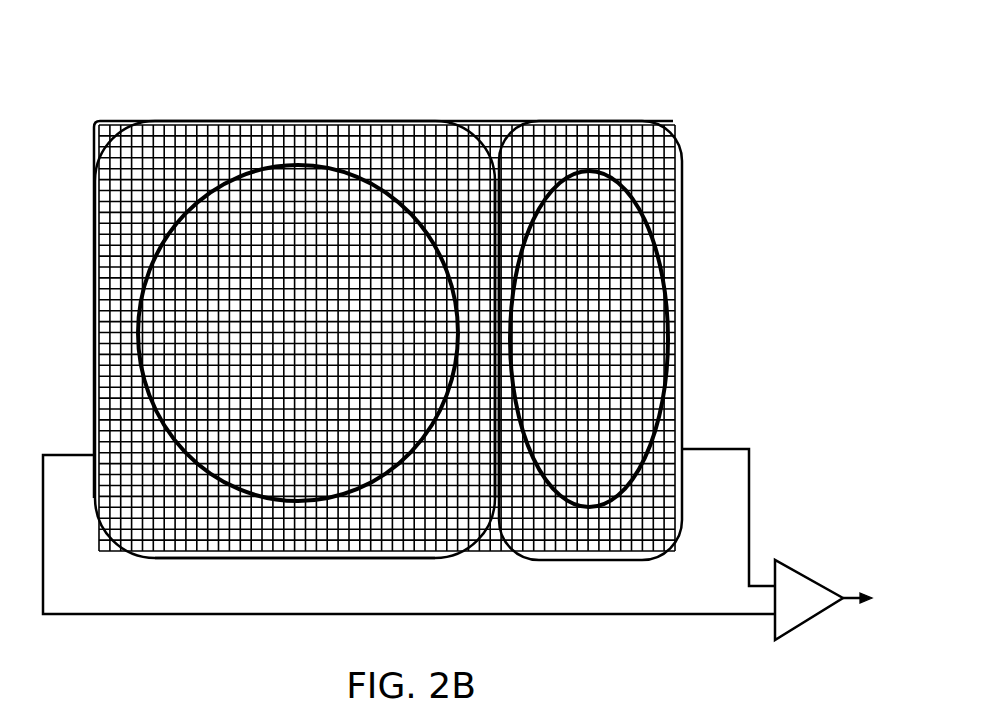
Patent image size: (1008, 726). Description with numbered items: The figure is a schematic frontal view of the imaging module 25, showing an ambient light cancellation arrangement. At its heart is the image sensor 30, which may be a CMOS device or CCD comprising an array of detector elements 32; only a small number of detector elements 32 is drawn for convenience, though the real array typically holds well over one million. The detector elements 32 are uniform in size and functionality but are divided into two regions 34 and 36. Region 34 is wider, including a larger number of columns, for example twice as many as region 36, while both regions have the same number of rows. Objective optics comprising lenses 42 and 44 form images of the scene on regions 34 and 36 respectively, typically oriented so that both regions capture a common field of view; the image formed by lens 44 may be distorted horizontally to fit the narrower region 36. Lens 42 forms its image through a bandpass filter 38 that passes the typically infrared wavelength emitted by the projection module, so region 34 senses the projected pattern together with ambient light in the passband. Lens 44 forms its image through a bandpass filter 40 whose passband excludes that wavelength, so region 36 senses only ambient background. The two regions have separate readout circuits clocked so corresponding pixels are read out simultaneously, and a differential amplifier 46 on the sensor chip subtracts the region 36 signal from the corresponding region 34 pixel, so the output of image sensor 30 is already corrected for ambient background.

The imaging module 25 is at (444, 335).
The image sensor 30 is at (666, 117).
The detector elements 32 is at (655, 142).
The region 34 is at (86, 106).
The region 36 is at (675, 106).
The bandpass filter 38 is at (191, 552).
The bandpass filter 40 is at (503, 548).
The lens 42 is at (130, 337).
The lens 44 is at (656, 252).
The differential amplifier 46 is at (808, 571).